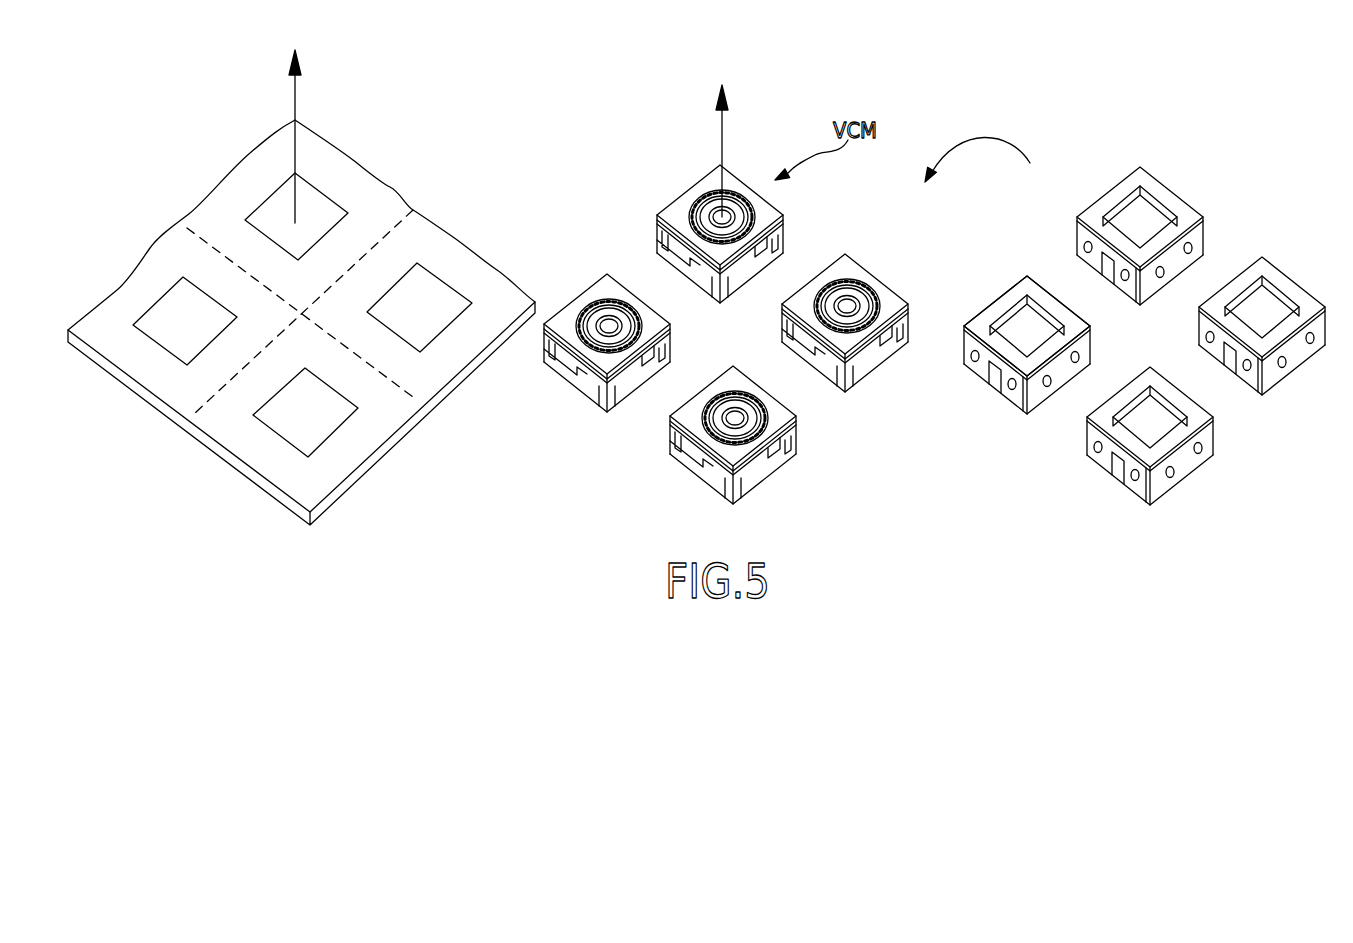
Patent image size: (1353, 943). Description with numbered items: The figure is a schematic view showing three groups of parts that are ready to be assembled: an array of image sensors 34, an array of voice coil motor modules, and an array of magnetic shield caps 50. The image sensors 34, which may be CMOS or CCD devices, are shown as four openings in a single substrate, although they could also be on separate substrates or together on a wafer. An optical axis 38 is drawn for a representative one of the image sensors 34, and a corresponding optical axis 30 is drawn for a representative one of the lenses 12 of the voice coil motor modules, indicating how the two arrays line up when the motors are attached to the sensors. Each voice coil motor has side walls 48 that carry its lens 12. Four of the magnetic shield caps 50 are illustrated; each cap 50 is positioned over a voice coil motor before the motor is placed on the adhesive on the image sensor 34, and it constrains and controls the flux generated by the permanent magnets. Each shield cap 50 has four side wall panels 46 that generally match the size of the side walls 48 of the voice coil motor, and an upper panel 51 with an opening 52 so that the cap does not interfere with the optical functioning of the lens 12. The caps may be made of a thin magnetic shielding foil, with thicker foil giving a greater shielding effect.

The lens 12 is at (740, 218).
The optical axis 30 is at (720, 133).
The image sensor 34 is at (340, 181).
The optical axis 38 is at (282, 90).
The side wall panel 46 is at (980, 367).
The side wall 48 is at (590, 375).
The magnetic shield cap 50 is at (1178, 168).
The upper panel 51 is at (980, 322).
The opening 52 is at (1030, 307).